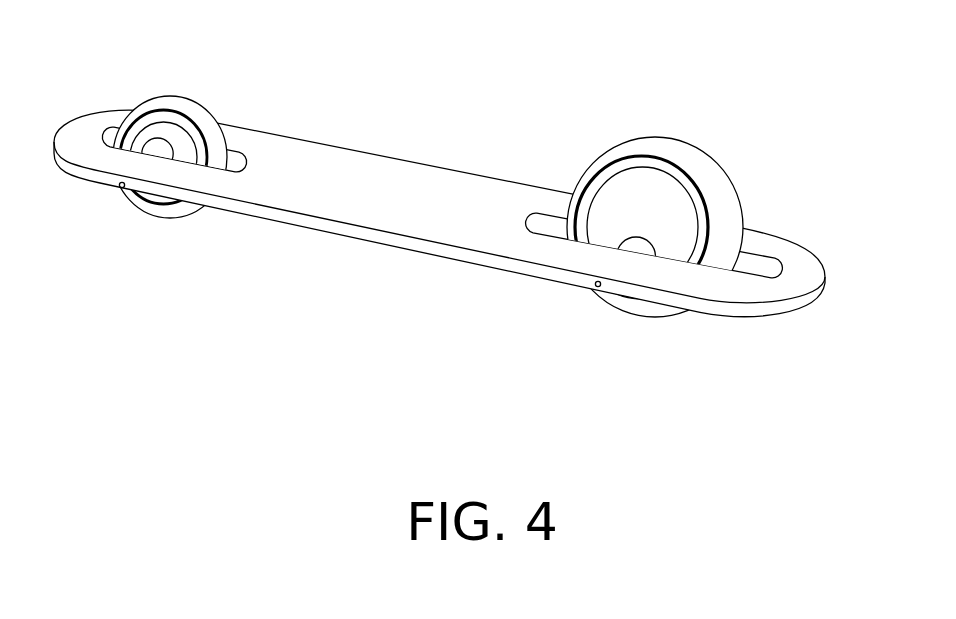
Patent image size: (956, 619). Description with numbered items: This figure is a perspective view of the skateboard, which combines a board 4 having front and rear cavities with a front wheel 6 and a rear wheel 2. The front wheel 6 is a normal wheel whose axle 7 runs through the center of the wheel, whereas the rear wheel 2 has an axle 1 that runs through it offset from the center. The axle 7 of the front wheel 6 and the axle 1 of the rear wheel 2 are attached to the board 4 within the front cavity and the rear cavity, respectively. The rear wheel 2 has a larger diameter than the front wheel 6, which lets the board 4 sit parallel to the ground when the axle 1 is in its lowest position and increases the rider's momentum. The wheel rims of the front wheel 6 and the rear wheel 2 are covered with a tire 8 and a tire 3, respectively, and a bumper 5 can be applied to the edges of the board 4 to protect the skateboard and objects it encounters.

The axle 1 is at (600, 286).
The rear wheel 2 is at (665, 215).
The tire 3 is at (713, 157).
The board 4 is at (537, 248).
The bumper 5 is at (452, 254).
The front wheel 6 is at (162, 130).
The axle 7 is at (120, 188).
The tire 8 is at (197, 100).